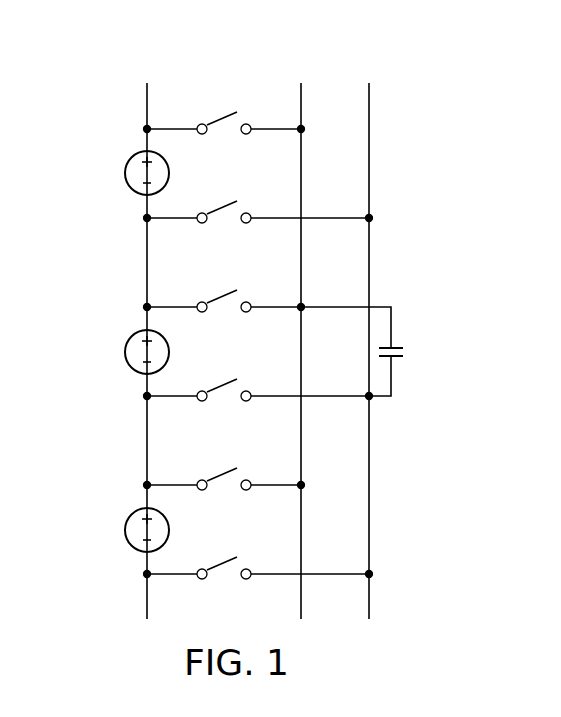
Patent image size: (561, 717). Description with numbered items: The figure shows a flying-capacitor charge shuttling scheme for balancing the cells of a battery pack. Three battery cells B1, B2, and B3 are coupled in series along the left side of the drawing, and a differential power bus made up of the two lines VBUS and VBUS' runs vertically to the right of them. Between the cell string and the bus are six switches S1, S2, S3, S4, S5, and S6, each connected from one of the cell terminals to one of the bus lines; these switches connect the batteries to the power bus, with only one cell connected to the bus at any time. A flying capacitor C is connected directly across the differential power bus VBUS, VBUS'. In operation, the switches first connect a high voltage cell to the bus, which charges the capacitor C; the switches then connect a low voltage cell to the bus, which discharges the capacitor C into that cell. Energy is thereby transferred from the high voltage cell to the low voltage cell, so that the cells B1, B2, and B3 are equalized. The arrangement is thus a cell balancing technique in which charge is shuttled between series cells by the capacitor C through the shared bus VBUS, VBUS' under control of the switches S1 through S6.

The battery cell B1 is at (130, 173).
The battery cell B2 is at (130, 352).
The battery cell B3 is at (130, 530).
The switch S1 is at (224, 144).
The switch S2 is at (258, 233).
The switch S3 is at (224, 322).
The switch S4 is at (258, 411).
The switch S5 is at (224, 500).
The switch S6 is at (258, 589).
The flying capacitor C is at (363, 351).
The power bus VBUS is at (297, 332).
The power bus VBUS' is at (361, 332).